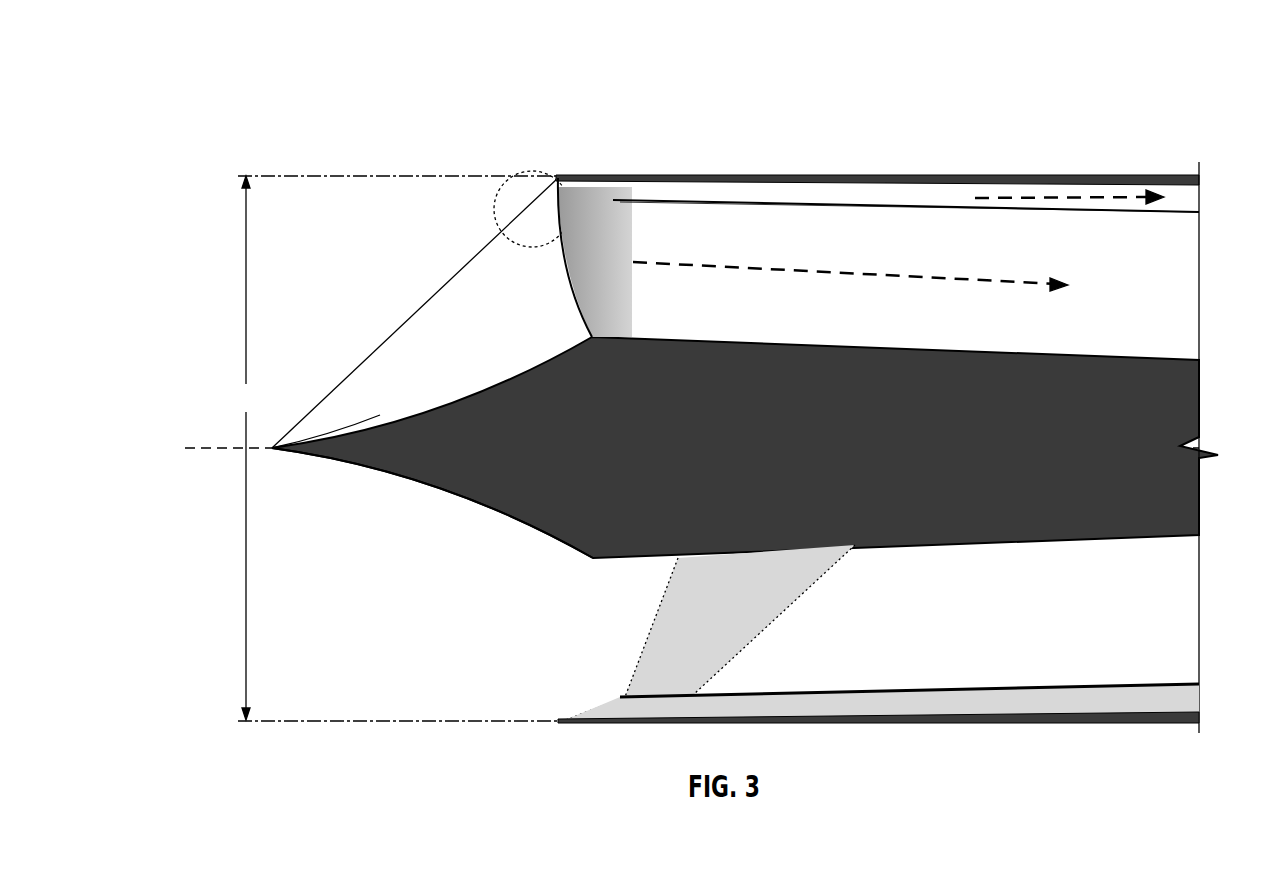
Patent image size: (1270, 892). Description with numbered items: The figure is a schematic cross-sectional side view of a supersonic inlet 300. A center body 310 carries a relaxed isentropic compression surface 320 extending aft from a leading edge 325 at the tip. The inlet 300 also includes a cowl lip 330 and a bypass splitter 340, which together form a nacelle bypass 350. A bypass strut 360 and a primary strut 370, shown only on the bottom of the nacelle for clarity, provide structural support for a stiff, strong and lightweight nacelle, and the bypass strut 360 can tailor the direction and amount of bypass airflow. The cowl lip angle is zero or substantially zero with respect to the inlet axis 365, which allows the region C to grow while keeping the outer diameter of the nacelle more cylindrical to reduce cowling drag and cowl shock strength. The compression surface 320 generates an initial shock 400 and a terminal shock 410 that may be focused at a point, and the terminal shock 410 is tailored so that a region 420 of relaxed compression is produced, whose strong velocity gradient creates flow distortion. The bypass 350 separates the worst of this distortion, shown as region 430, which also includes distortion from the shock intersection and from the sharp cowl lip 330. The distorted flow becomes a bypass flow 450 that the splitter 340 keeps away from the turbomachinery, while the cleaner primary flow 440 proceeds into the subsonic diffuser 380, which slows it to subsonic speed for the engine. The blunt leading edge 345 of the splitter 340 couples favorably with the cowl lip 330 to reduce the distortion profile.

The inlet 300 is at (310, 111).
The center body 310 is at (560, 547).
The relaxed isentropic compression surface 320 is at (433, 495).
The leading edge 325 is at (274, 450).
The cowl lip 330 is at (562, 723).
The bypass splitter 340 is at (815, 205).
The blunt leading edge 345 is at (613, 198).
The nacelle bypass 350 is at (695, 192).
The bypass strut 360 is at (1110, 702).
The inlet axis 365 is at (238, 447).
The primary strut 370 is at (728, 637).
The subsonic diffuser 380 is at (1115, 615).
The initial shock 400 is at (418, 308).
The terminal shock 410 is at (570, 280).
The region of relaxed compression 420 is at (535, 168).
The region of flow distortion 430 is at (557, 176).
The primary flow 440 is at (985, 283).
The bypass flow 450 is at (1117, 197).
The region C is at (398, 448).